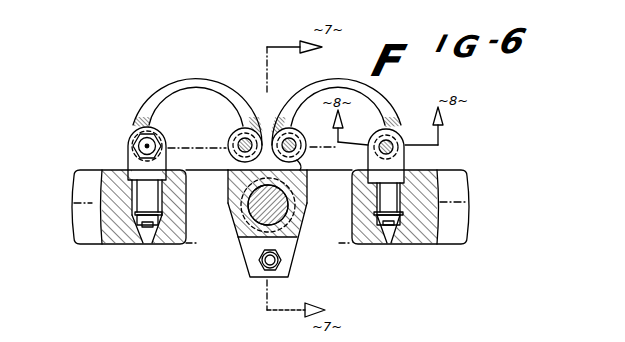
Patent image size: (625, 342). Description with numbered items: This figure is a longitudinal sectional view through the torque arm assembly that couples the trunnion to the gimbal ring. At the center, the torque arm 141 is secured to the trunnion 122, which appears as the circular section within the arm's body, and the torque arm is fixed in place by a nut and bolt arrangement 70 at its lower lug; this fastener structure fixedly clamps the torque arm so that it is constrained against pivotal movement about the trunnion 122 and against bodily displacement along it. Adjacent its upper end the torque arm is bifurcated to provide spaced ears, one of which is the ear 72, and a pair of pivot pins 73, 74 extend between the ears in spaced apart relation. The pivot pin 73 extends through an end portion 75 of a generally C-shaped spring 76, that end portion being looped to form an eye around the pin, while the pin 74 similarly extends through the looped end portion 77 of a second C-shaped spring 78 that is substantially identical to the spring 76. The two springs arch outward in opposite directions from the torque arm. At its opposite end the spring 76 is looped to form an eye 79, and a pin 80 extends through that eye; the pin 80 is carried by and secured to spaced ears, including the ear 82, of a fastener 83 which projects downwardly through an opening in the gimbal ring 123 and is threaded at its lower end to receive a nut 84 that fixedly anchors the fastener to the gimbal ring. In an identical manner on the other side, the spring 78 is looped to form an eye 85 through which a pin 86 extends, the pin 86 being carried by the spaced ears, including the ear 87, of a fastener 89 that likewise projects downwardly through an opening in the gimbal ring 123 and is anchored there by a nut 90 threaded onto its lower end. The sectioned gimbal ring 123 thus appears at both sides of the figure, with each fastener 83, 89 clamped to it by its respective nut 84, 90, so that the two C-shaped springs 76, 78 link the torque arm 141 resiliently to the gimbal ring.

The nut and bolt arrangement 70 is at (268, 264).
The ear 72 is at (226, 172).
The pivot pin 73 is at (291, 147).
The pivot pin 74 is at (241, 143).
The end portion 75 is at (303, 158).
The C-shaped spring 76 is at (347, 83).
The looped end portion 77 is at (230, 154).
The C-shaped spring 78 is at (203, 80).
The eye 79 is at (405, 158).
The pin 80 is at (385, 143).
The ear 82 is at (405, 162).
The fastener 83 is at (388, 180).
The nut 84 is at (393, 224).
The eye 85 is at (131, 153).
The pin 86 is at (145, 142).
The ear 87 is at (128, 167).
The fastener 89 is at (140, 192).
The nut 90 is at (146, 228).
The trunnion 122 is at (278, 218).
The gimbal ring 123 is at (450, 232).
The torque arm 141 is at (243, 233).